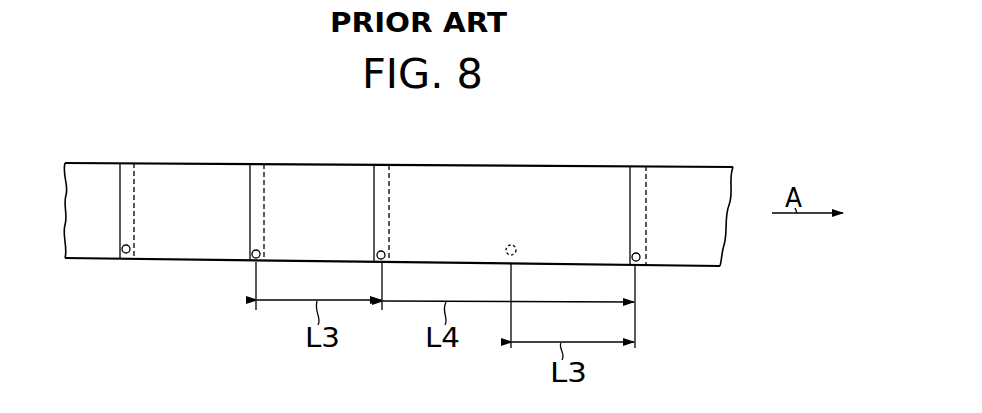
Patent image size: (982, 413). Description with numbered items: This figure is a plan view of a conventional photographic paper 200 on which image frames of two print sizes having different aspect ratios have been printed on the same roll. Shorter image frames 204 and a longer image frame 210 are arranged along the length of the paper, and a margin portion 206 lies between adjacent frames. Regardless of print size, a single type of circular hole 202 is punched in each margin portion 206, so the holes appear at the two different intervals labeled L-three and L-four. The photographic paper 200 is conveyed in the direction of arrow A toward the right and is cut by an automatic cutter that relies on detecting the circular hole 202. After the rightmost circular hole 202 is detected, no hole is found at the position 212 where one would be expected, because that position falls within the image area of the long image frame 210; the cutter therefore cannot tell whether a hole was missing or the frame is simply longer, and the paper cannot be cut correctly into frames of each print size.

The photographic paper 200 is at (607, 125).
The circular hole 202 is at (124, 262).
The image frame 204 is at (352, 165).
The margin portion 206 is at (642, 168).
The image frame 210 is at (493, 167).
The position 212 is at (516, 258).